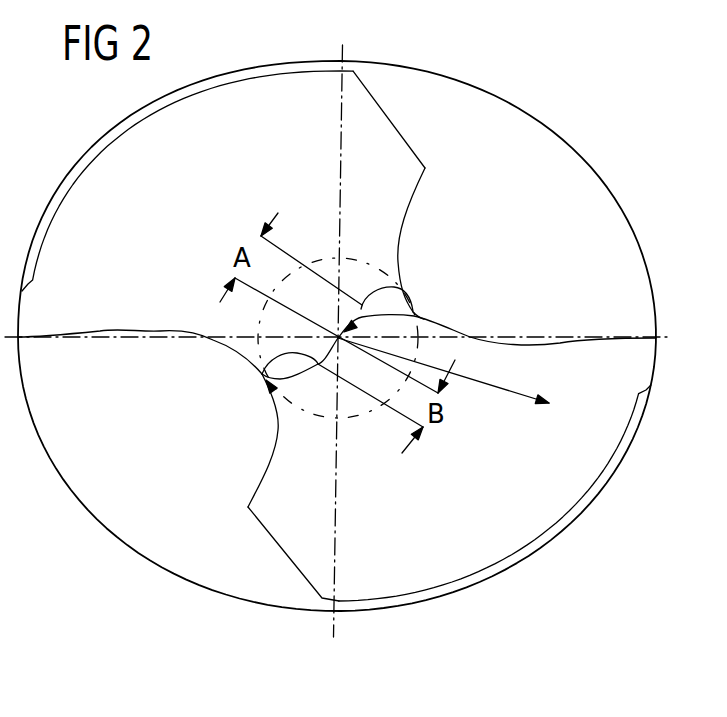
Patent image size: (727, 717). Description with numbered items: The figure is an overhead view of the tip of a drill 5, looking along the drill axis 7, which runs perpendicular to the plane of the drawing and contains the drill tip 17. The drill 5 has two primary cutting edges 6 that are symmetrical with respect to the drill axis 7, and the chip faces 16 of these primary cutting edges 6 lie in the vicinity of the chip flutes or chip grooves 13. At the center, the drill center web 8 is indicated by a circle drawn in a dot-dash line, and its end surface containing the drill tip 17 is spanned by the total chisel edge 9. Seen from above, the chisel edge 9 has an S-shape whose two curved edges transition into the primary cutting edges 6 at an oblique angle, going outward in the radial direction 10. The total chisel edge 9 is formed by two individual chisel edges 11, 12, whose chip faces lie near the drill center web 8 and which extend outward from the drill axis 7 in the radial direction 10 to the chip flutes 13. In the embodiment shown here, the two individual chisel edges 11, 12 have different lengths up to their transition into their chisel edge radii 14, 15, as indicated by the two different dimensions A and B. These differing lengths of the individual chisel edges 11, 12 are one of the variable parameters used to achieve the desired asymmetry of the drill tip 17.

The drill 5 is at (539, 115).
The primary cutting edges 6 is at (544, 342).
The drill axis 7 is at (414, 318).
The drill center web 8 is at (323, 258).
The total chisel edge 9 is at (348, 300).
The radial direction 10 is at (501, 389).
The individual chisel edge 11 is at (262, 375).
The individual chisel edge 12 is at (399, 283).
The chip flutes 13 is at (531, 245).
The chisel edge radius 14 is at (300, 383).
The chisel edge radius 15 is at (380, 288).
The chip faces 16 is at (164, 255).
The drill tip 17 is at (340, 340).